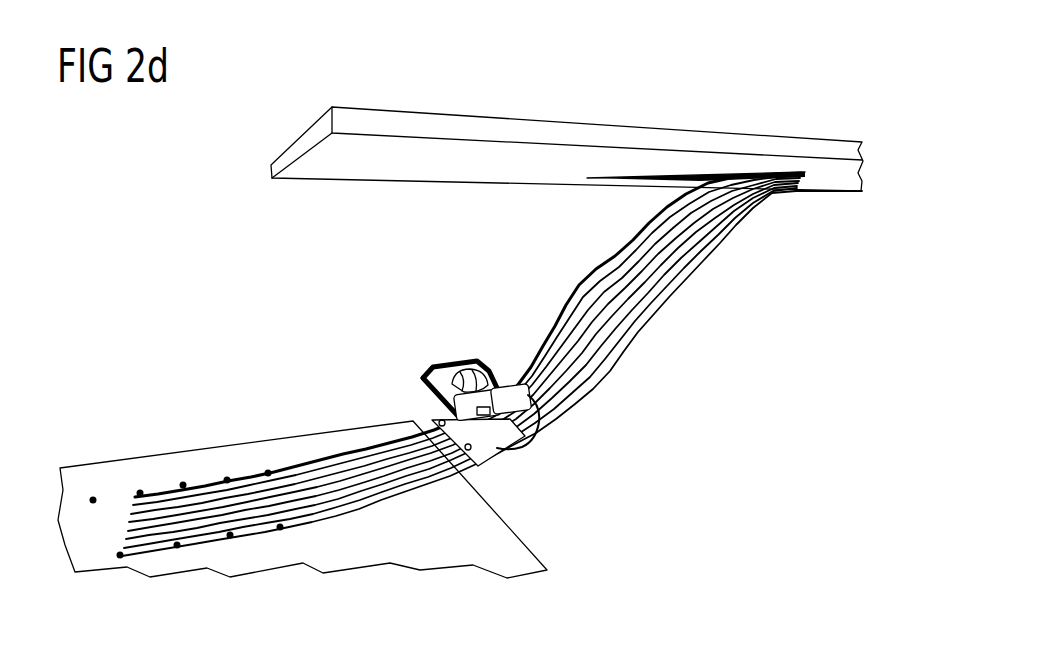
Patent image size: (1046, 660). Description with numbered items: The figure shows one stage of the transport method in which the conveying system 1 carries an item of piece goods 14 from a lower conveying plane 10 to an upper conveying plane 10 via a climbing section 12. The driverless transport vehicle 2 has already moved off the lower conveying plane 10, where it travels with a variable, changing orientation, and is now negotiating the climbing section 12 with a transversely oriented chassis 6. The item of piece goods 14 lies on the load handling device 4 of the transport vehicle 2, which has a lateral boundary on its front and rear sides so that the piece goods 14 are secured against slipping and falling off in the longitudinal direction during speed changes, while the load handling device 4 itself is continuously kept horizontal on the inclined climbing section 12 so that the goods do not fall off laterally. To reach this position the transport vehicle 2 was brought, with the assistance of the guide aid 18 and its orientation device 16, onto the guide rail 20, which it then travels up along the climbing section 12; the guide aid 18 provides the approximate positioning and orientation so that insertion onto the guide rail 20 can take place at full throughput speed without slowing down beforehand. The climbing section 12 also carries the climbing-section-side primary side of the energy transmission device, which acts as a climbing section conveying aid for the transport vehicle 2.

The conveying system 1 is at (183, 211).
The driverless transport vehicle 2 is at (479, 358).
The load handling device 4 is at (422, 377).
The chassis 6 is at (490, 440).
The conveying plane 10 is at (565, 122).
The climbing section 12 is at (603, 372).
The item of piece goods 14 is at (488, 371).
The orientation device of the guide aid 16 is at (422, 390).
The guide aid 18 is at (140, 491).
The guide rail 20 is at (358, 496).